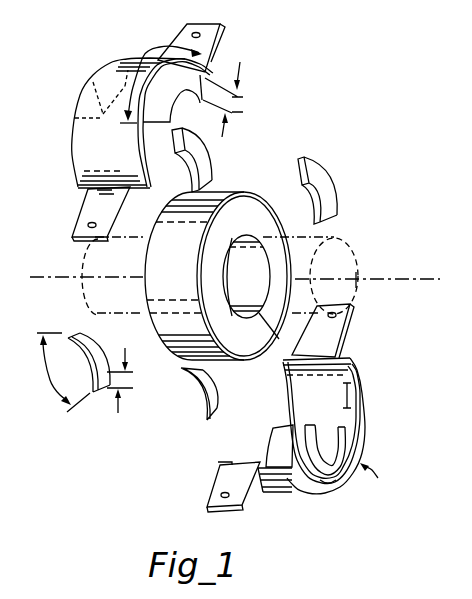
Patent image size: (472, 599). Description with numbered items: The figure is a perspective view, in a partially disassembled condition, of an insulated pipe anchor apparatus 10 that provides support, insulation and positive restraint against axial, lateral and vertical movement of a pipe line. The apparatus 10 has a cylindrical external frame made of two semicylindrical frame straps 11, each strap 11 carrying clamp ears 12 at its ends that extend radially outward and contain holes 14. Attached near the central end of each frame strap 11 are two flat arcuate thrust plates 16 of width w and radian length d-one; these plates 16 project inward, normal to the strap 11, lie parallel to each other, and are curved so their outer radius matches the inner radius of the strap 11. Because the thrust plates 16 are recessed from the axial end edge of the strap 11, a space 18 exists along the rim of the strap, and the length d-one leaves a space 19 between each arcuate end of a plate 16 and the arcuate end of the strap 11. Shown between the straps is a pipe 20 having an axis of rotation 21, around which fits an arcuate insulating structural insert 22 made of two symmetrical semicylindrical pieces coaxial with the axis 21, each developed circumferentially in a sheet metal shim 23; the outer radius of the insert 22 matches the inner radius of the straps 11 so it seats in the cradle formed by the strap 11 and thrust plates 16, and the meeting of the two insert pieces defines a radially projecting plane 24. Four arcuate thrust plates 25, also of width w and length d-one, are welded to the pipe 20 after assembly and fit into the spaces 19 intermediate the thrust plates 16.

The insulated pipe anchor apparatus 10 is at (382, 482).
The semicylindrical frame strap 11 is at (78, 141).
The clamp ear 12 is at (216, 25).
The hole 14 is at (197, 30).
The flat arcuate thrust plate 16 is at (93, 81).
The space 18 is at (335, 476).
The space 19 is at (145, 152).
The pipe 20 is at (97, 313).
The axis of rotation 21 is at (420, 279).
The arcuate insulating structural insert 22 is at (263, 221).
The shim 23 is at (227, 258).
The plane 24 is at (250, 312).
The arcuate thrust plate 25 is at (200, 156).